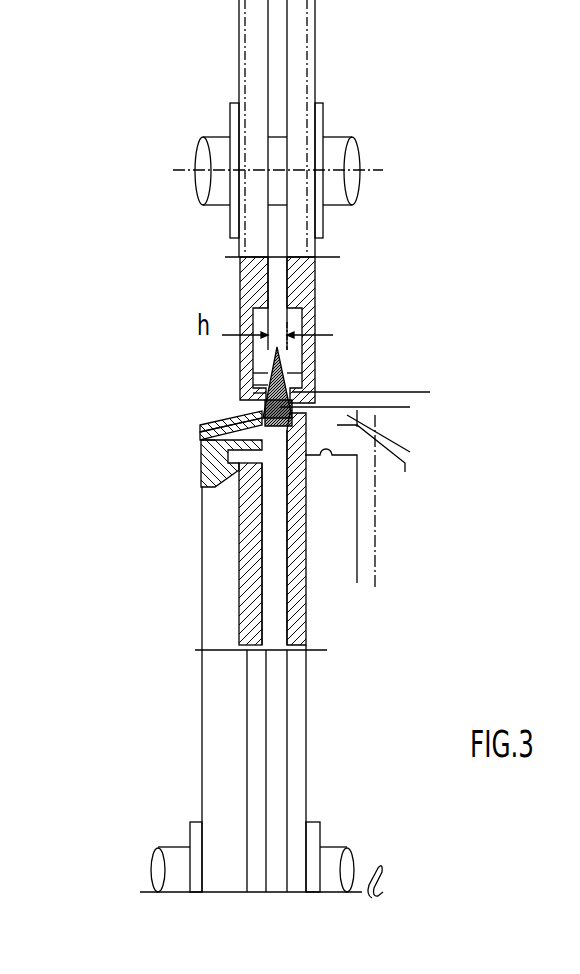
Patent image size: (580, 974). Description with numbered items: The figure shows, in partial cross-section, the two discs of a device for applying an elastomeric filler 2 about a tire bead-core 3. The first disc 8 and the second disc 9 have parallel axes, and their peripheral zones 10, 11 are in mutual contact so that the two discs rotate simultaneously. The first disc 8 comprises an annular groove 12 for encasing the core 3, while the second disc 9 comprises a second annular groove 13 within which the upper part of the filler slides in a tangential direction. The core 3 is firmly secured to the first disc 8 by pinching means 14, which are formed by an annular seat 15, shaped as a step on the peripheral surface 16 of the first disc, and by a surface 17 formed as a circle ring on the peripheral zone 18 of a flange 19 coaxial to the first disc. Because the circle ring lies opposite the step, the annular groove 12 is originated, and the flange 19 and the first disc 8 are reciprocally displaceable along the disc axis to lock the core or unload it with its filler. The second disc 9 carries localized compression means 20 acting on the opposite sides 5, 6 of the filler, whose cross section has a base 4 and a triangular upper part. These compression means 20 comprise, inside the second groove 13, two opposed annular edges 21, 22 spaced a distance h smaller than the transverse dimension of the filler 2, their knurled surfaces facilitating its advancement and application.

The elastomeric filler 2 is at (275, 365).
The tire bead-core 3 is at (268, 538).
The base 4 is at (290, 427).
The opposite side 5 is at (277, 373).
The opposite side 6 is at (277, 373).
The first disc 8 is at (237, 578).
The second disc 9 is at (302, 275).
The peripheral zone 10 is at (202, 439).
The peripheral zone 11 is at (268, 405).
The annular groove 12 is at (410, 407).
The second annular groove 13 is at (292, 347).
The pinching means 14 is at (282, 432).
The annular seat 15 is at (410, 452).
The peripheral surface 16 is at (405, 472).
The surface 17 is at (202, 446).
The peripheral zone 18 is at (213, 502).
The flange 19 is at (250, 563).
The localized compression means 20 is at (253, 385).
The annular edge 21 is at (262, 393).
The annular edge 22 is at (430, 392).